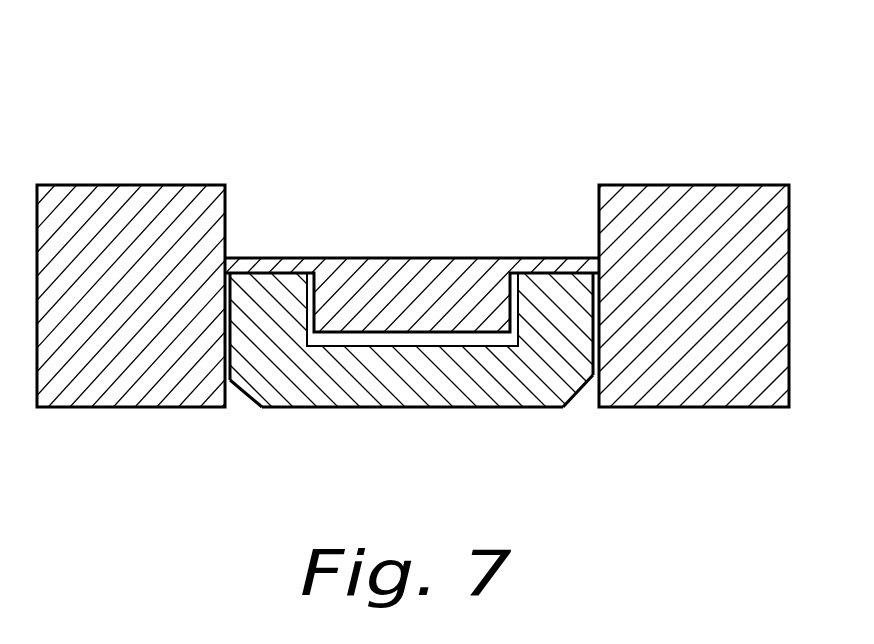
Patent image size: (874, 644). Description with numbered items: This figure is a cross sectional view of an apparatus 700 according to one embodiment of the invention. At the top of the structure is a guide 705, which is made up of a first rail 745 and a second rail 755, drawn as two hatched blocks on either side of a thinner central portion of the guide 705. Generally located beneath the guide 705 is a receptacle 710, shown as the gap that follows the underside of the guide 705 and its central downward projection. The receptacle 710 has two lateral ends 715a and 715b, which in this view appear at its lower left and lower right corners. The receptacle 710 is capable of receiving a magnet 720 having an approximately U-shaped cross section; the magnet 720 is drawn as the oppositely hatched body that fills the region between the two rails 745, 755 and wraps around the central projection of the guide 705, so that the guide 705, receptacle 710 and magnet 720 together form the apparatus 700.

The apparatus 700 is at (130, 150).
The guide 705 is at (428, 286).
The receptacle 710 is at (441, 340).
The first lateral end 715a is at (234, 395).
The second lateral end 715b is at (589, 394).
The magnet 720 is at (337, 358).
The first rail 745 is at (80, 362).
The second rail 755 is at (717, 240).